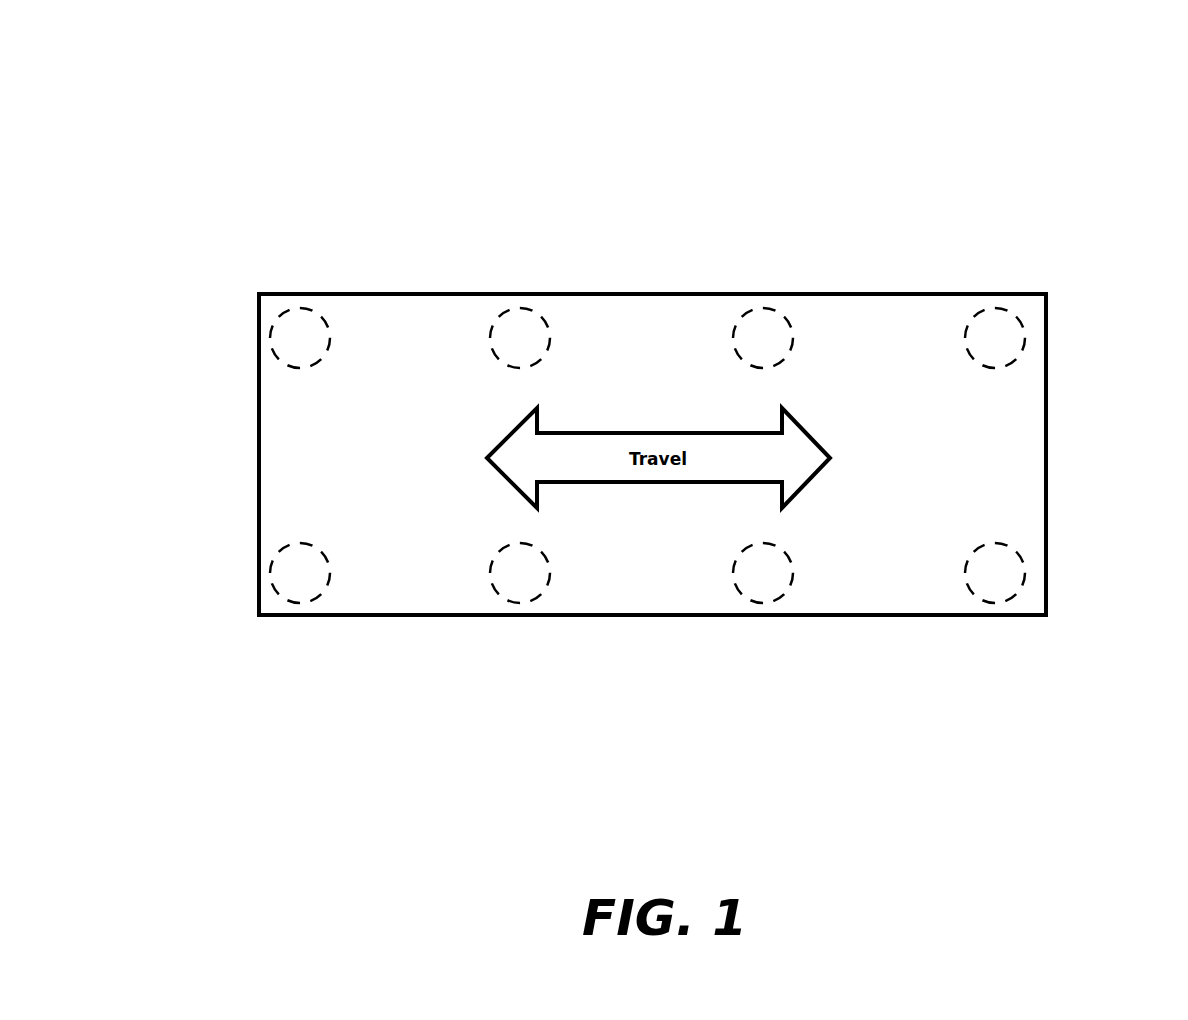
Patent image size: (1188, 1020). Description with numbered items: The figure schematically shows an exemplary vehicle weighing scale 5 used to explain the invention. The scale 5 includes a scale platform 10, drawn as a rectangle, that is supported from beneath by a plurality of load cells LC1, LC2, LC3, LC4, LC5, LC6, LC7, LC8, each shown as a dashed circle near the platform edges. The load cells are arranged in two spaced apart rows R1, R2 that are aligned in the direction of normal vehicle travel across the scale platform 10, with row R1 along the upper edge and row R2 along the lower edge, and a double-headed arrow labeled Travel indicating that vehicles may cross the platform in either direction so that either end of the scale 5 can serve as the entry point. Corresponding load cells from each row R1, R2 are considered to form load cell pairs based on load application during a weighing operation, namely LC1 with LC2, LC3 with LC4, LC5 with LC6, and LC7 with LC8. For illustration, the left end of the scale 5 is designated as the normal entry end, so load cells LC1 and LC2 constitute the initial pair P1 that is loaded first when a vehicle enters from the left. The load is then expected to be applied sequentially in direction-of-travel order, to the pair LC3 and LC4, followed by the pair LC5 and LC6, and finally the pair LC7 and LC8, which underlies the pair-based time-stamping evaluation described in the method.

The vehicle weighing scale 5 is at (292, 114).
The scale platform 10 is at (866, 291).
The initial pair of load cells P1 is at (272, 575).
The first row of load cells R1 is at (1024, 339).
The second row of load cells R2 is at (1025, 573).
The load cell LC1 is at (300, 338).
The load cell LC2 is at (300, 573).
The load cell LC3 is at (520, 338).
The load cell LC4 is at (520, 573).
The load cell LC5 is at (763, 338).
The load cell LC6 is at (763, 573).
The load cell LC7 is at (995, 338).
The load cell LC8 is at (995, 573).